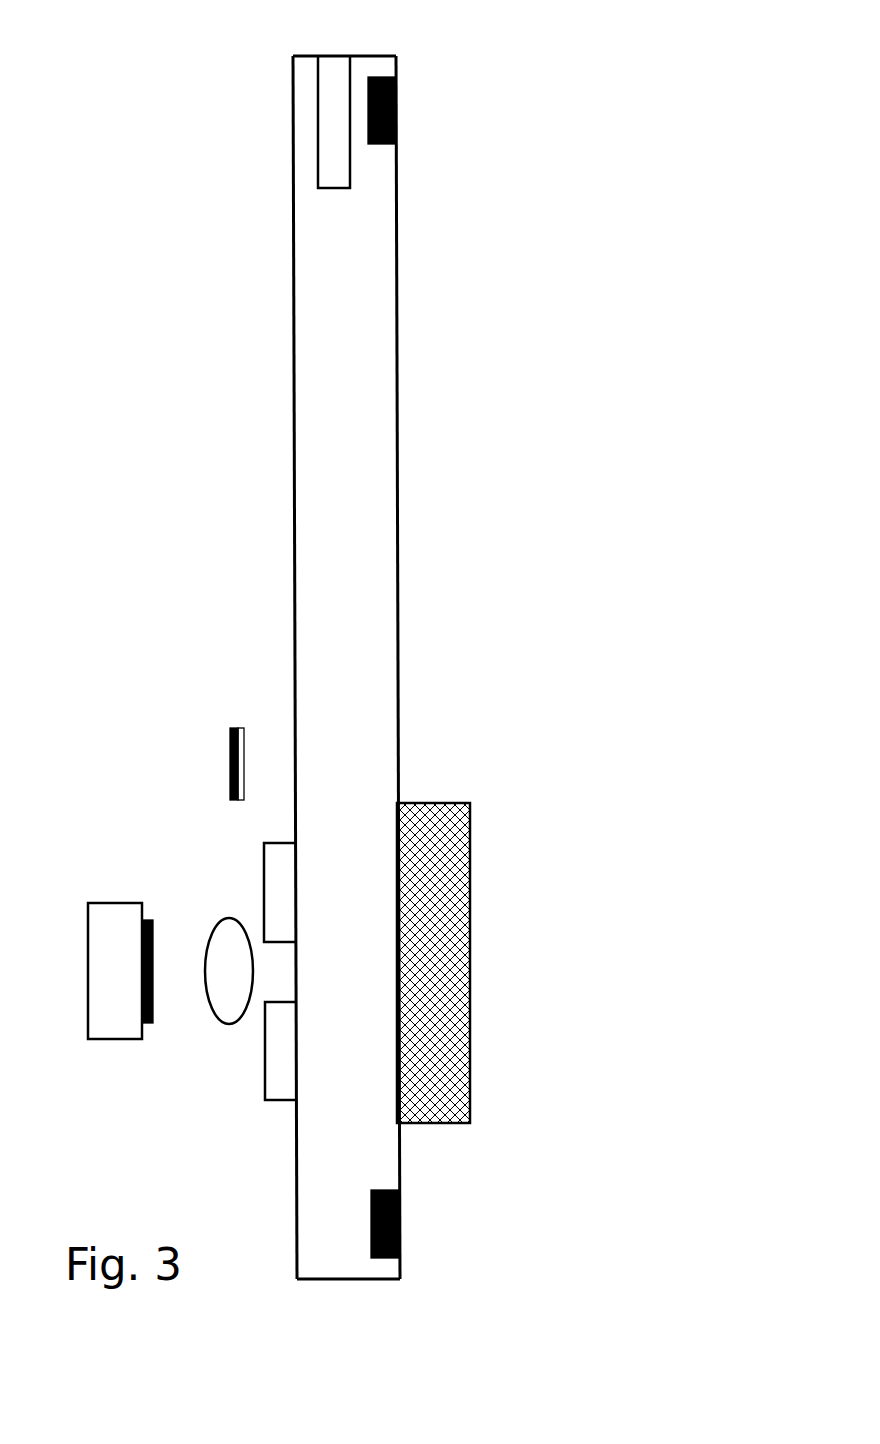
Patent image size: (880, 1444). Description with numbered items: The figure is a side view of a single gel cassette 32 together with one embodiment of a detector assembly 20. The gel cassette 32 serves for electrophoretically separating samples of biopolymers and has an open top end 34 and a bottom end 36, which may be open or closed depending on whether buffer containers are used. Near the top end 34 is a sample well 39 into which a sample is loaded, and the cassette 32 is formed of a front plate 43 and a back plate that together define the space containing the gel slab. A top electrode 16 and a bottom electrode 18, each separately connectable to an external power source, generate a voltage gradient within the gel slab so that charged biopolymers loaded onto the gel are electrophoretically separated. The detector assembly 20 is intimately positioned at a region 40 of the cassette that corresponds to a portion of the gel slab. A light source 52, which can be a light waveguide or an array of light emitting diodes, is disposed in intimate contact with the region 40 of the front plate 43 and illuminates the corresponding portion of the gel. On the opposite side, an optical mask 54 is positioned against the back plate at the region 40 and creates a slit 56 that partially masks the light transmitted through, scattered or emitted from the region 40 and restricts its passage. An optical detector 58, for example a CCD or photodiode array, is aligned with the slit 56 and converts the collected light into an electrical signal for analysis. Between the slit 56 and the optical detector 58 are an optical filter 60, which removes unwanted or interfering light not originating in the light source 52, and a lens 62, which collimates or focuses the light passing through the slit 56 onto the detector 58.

The top electrode 16 is at (396, 88).
The bottom electrode 18 is at (400, 1223).
The detector assembly 20 is at (496, 611).
The gel cassette 32 is at (397, 353).
The open top end 34 is at (360, 62).
The bottom end 36 is at (333, 1270).
The sample well 39 is at (332, 70).
The region 40 is at (367, 977).
The front plate 43 is at (388, 505).
The light source 52 is at (462, 820).
The optical mask 54 is at (229, 756).
The slit 56 is at (278, 1077).
The optical detector 58 is at (93, 1005).
The optical filter 60 is at (152, 1025).
The lens 62 is at (218, 918).